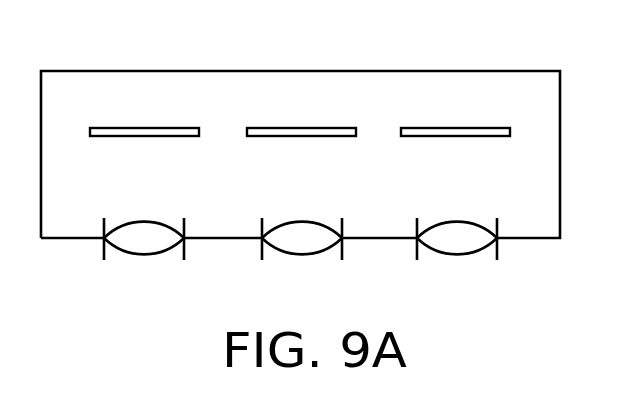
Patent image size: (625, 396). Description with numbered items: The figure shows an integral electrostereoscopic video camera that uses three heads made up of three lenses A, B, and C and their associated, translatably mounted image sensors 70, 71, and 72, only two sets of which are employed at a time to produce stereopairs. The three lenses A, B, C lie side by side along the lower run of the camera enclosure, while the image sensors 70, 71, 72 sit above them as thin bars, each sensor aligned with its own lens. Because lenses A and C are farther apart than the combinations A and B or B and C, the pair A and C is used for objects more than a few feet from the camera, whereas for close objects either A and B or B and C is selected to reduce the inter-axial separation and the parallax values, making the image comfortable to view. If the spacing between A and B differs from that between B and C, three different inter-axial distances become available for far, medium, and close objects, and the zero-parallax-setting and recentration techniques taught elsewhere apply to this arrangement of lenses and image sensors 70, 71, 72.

The image sensor 70 is at (128, 128).
The image sensor 71 is at (293, 128).
The image sensor 72 is at (450, 128).
The lens A is at (128, 255).
The lens B is at (283, 256).
The lens C is at (445, 256).